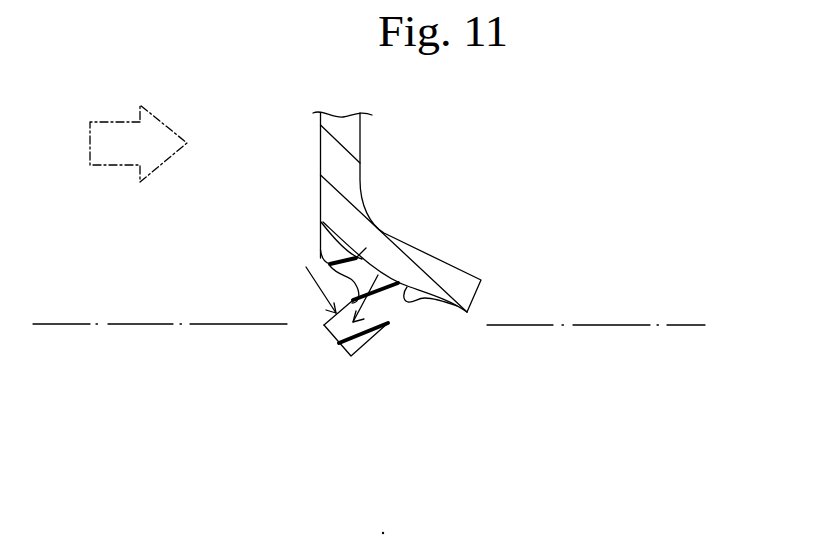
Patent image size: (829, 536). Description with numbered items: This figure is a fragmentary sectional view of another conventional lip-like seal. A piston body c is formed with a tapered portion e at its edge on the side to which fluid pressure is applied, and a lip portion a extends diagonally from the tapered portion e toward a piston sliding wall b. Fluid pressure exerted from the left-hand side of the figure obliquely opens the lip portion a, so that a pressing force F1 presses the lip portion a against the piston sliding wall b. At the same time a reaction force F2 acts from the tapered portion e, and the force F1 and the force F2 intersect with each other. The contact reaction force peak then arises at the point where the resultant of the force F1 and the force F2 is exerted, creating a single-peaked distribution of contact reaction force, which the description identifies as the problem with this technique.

The lip portion a is at (353, 357).
The piston sliding wall b is at (123, 322).
The piston body c is at (362, 172).
The tapered portion e is at (418, 292).
The force (pressing force) F1 is at (315, 283).
The force (reaction force) F2 is at (408, 302).